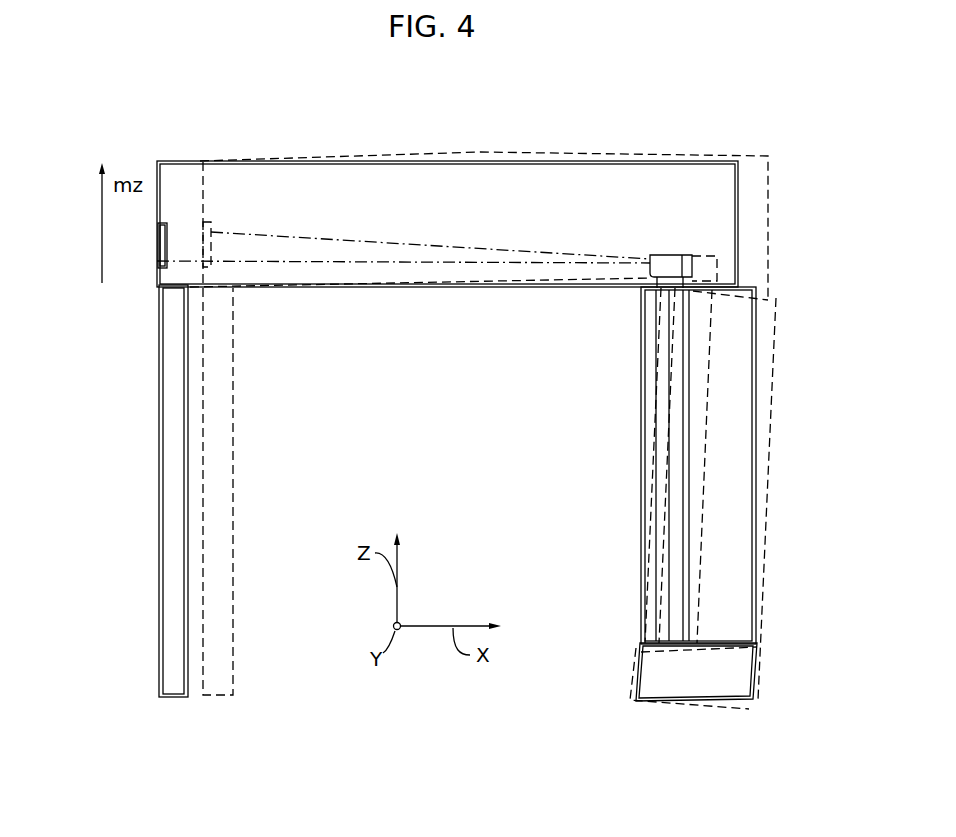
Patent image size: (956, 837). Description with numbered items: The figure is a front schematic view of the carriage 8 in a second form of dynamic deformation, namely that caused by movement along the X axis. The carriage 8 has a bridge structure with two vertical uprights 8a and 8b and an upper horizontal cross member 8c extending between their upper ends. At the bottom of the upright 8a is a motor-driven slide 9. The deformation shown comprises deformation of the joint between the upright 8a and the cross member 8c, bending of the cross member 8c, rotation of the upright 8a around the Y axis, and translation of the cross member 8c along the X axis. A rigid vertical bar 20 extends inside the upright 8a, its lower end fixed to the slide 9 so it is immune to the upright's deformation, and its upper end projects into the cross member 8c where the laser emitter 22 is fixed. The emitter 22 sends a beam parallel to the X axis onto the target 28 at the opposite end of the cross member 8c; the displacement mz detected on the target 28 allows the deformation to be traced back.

The carriage 8 is at (699, 158).
The vertical upright 8a is at (712, 503).
The vertical upright 8b is at (168, 590).
The upper horizontal cross member 8c is at (553, 192).
The motor-driven slide 9 is at (745, 677).
The vertical bar 20 is at (678, 388).
The laser emitter 22 is at (660, 262).
The target 28 is at (163, 225).